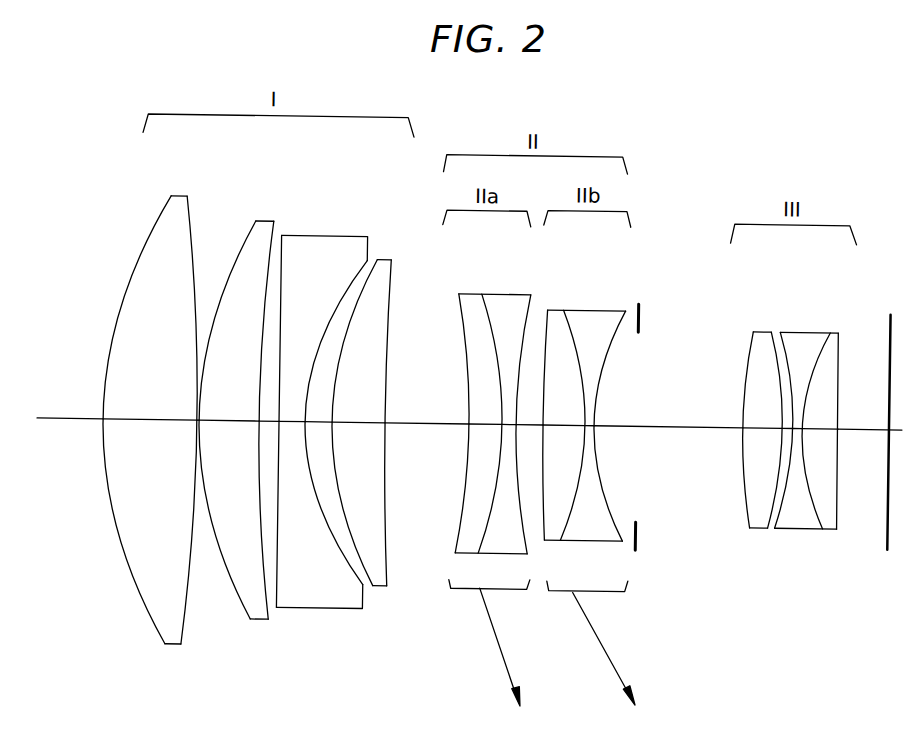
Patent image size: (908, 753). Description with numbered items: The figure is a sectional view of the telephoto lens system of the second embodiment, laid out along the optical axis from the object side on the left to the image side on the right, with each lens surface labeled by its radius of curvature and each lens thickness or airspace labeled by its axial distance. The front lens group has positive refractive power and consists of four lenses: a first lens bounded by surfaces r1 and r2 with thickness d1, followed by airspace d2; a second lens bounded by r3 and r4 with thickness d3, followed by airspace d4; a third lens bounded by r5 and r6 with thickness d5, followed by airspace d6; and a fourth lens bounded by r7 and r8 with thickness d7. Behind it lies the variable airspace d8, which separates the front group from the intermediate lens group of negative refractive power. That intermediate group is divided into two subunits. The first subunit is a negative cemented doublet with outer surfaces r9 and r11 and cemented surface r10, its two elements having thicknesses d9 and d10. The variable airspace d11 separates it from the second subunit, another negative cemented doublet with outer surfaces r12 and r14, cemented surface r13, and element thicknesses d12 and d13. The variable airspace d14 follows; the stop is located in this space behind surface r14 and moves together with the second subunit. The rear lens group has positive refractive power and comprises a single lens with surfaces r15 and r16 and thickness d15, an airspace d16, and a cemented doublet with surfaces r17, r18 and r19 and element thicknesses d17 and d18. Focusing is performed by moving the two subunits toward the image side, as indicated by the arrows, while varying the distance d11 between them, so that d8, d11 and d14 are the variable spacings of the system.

The radius of curvature of first lens surface r1 is at (160, 216).
The radius of curvature of second lens surface r2 is at (192, 216).
The radius of curvature of third lens surface r3 is at (242, 250).
The radius of curvature of fourth lens surface r4 is at (280, 230).
The radius of curvature of fifth lens surface r5 is at (283, 253).
The radius of curvature of sixth lens surface r6 is at (357, 270).
The radius of curvature of seventh lens surface r7 is at (367, 278).
The radius of curvature of eighth lens surface r8 is at (392, 278).
The radius of curvature of ninth lens surface r9 is at (460, 310).
The radius of curvature of tenth lens surface r10 is at (493, 312).
The radius of curvature of eleventh lens surface r11 is at (527, 315).
The radius of curvature of twelfth lens surface r12 is at (549, 322).
The radius of curvature of thirteenth lens surface r13 is at (574, 330).
The radius of curvature of fourteenth lens surface r14 is at (607, 328).
The radius of curvature of fifteenth lens surface r15 is at (750, 350).
The radius of curvature of sixteenth lens surface r16 is at (772, 345).
The radius of curvature of seventeenth lens surface r17 is at (790, 345).
The radius of curvature of eighteenth lens surface r18 is at (820, 347).
The radius of curvature of nineteenth lens surface r19 is at (843, 352).
The thickness of first lens d1 is at (147, 422).
The airspace between first and second lenses d2 is at (197, 420).
The thickness of second lens d3 is at (227, 422).
The airspace between second and third lenses d4 is at (262, 419).
The thickness of third lens d5 is at (294, 424).
The airspace between third and fourth lenses d6 is at (318, 422).
The thickness of fourth lens d7 is at (355, 424).
The variable airspace between front group and first subunit d8 is at (421, 424).
The thickness of first element of first subunit d9 is at (484, 427).
The thickness of second element of first subunit d10 is at (502, 424).
The variable airspace between first and second subunits d11 is at (530, 425).
The thickness of first element of second subunit d12 is at (563, 427).
The thickness of second element of second subunit d13 is at (594, 425).
The variable airspace between second subunit and rear group d14 is at (686, 426).
The thickness of first lens of rear group d15 is at (762, 430).
The airspace within rear group d16 is at (790, 428).
The thickness of first element of rear doublet d17 is at (800, 430).
The thickness of second element of rear doublet d18 is at (825, 430).